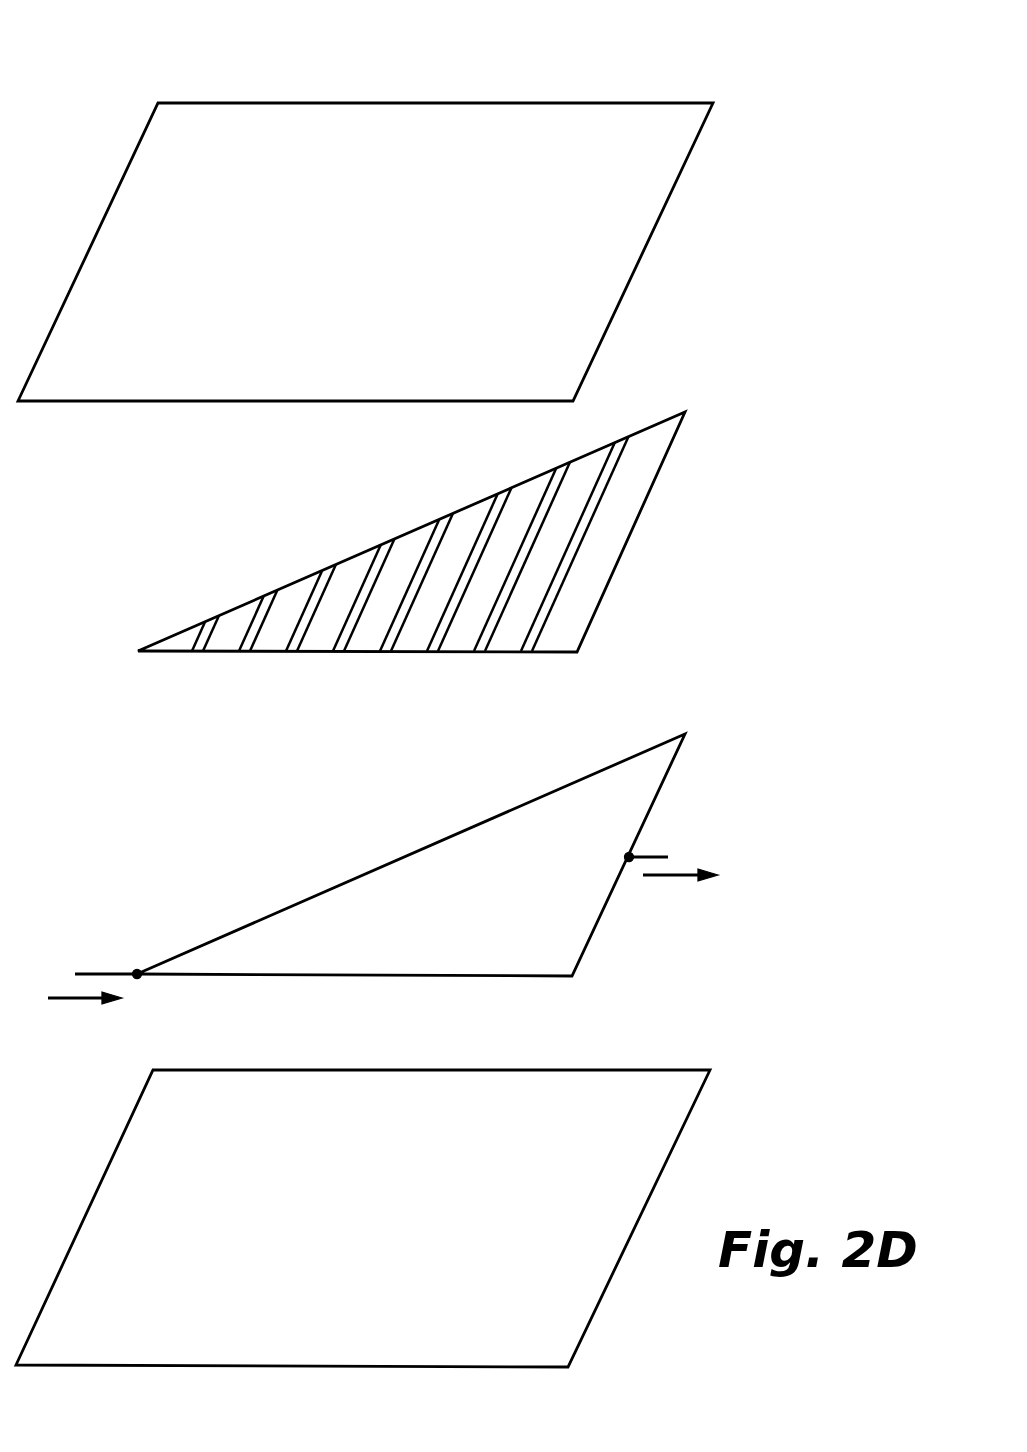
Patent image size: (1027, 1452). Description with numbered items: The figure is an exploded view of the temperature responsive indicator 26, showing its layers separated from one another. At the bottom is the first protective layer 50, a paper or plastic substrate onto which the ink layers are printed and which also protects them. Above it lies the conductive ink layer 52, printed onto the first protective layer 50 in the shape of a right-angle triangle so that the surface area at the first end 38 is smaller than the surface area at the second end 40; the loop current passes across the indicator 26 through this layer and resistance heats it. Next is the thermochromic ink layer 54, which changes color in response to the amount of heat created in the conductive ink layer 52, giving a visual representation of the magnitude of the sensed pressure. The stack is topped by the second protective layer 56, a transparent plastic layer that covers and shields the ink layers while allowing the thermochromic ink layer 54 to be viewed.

The temperature responsive indicator 26 is at (78, 120).
The second protective layer 56 is at (617, 235).
The thermochromic ink layer 54 is at (565, 608).
The conductive ink layer 52 is at (563, 940).
The first end 38 is at (150, 999).
The second end 40 is at (556, 994).
The first protective layer 50 is at (542, 1330).